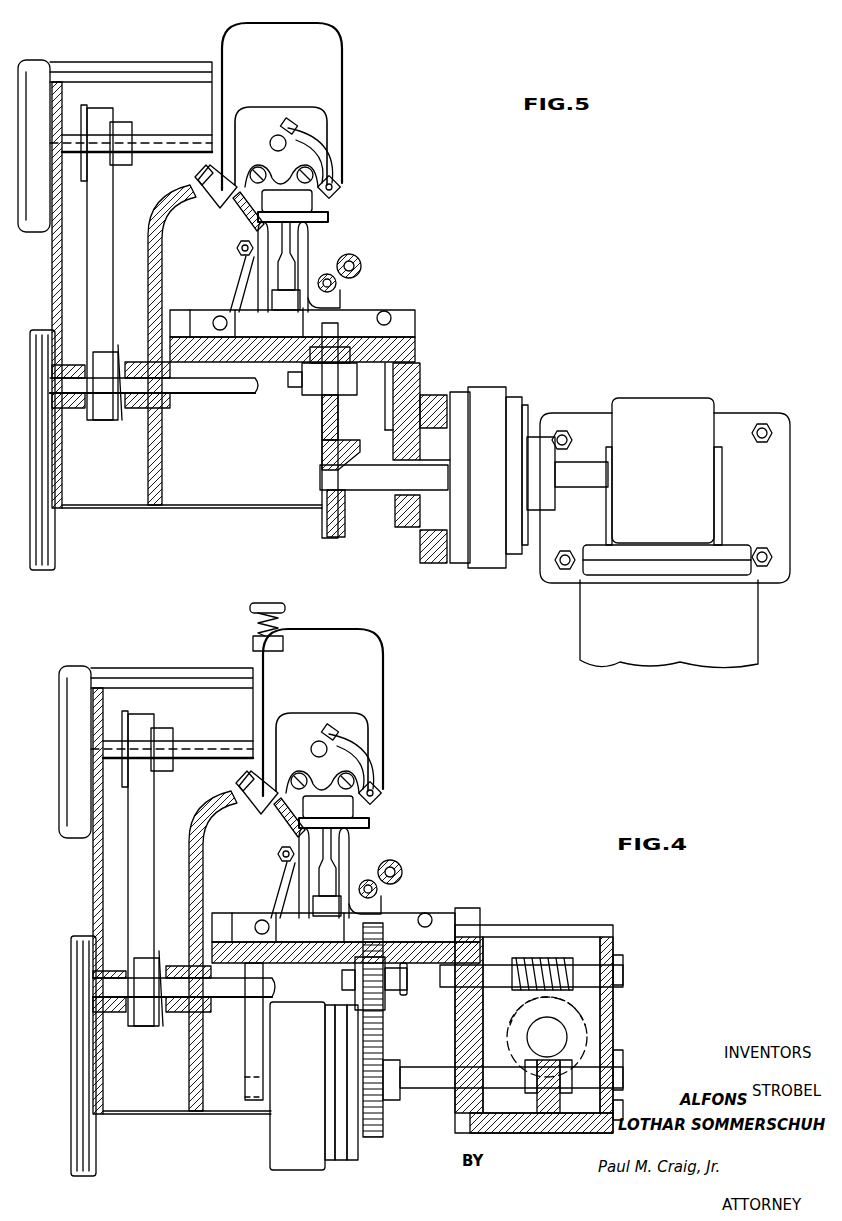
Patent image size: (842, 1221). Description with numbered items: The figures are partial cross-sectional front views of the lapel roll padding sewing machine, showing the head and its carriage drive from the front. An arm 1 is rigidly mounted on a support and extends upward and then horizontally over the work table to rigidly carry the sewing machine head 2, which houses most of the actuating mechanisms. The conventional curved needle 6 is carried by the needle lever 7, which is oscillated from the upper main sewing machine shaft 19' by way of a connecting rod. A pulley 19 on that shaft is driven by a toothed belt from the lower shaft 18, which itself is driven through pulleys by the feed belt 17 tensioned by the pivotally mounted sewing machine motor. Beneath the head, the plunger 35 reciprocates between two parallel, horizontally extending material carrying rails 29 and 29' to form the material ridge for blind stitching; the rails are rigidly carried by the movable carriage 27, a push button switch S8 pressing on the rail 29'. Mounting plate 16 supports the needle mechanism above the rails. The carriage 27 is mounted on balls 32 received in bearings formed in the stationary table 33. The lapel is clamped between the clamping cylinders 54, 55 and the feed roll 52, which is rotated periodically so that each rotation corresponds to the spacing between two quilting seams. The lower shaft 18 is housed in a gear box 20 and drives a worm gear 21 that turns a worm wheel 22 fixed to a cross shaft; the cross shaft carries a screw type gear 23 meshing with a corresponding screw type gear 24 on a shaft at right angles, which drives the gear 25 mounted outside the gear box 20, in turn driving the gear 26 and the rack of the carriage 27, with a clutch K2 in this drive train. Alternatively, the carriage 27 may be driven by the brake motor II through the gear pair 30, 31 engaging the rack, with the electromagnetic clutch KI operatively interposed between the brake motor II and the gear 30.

In FIG. 5, the arm 1 is at (150, 232).
In FIG. 5, the sewing machine head 2 is at (333, 78).
In FIG. 4, the sewing machine head 2 is at (333, 712).
In FIG. 5, the curved needle 6 is at (313, 147).
In FIG. 4, the curved needle 6 is at (344, 771).
In FIG. 5, the needle lever 7 is at (329, 206).
In FIG. 4, the needle lever 7 is at (377, 800).
In FIG. 5, the base plate 16 is at (336, 217).
In FIG. 4, the base plate 16 is at (360, 820).
In FIG. 5, the push button switch S8 is at (242, 218).
In FIG. 4, the push button switch S8 is at (270, 804).
In FIG. 5, the clamping cylinder 54 is at (237, 248).
In FIG. 4, the clamping cylinder 54 is at (265, 856).
In FIG. 5, the material carrying rail 29 is at (305, 265).
In FIG. 4, the material carrying rail 29 is at (346, 871).
In FIG. 5, the material carrying rail 29' is at (226, 284).
In FIG. 4, the material carrying rail 29' is at (267, 890).
In FIG. 5, the plunger 35 is at (290, 262).
In FIG. 4, the plunger 35 is at (343, 872).
In FIG. 5, the clamping cylinder 55 is at (357, 264).
In FIG. 4, the clamping cylinder 55 is at (401, 864).
In FIG. 5, the feed roll 52 is at (336, 289).
In FIG. 4, the feed roll 52 is at (384, 895).
In FIG. 5, the movable carriage 27 is at (367, 312).
In FIG. 4, the movable carriage 27 is at (408, 918).
In FIG. 5, the balls 32 is at (390, 314).
In FIG. 4, the balls 32 is at (431, 918).
In FIG. 5, the stationary table 33 is at (415, 345).
In FIG. 5, the electromagnetic clutch KI is at (485, 395).
In FIG. 5, the brake motor II is at (648, 408).
In FIG. 5, the main sewing machine shaft 19' is at (131, 128).
In FIG. 4, the main sewing machine shaft 19' is at (172, 734).
In FIG. 5, the pulley 19 is at (74, 262).
In FIG. 4, the pulley 19 is at (152, 868).
In FIG. 5, the lower shaft 18 is at (222, 395).
In FIG. 4, the lower shaft 18 is at (184, 1006).
In FIG. 5, the gear 31 is at (322, 415).
In FIG. 5, the gear 30 is at (322, 452).
In FIG. 5, the feed belt 17 is at (40, 510).
In FIG. 4, the feed belt 17 is at (71, 1056).
In FIG. 4, the clutch K2 is at (283, 1125).
In FIG. 4, the gear 26 is at (383, 1008).
In FIG. 4, the gear 25 is at (385, 1120).
In FIG. 4, the worm gear 21 is at (555, 955).
In FIG. 4, the screw type gear 23 is at (577, 1000).
In FIG. 4, the worm wheel 22 is at (510, 1037).
In FIG. 4, the gear box 20 is at (614, 1020).
In FIG. 4, the screw type gear 24 is at (548, 1113).